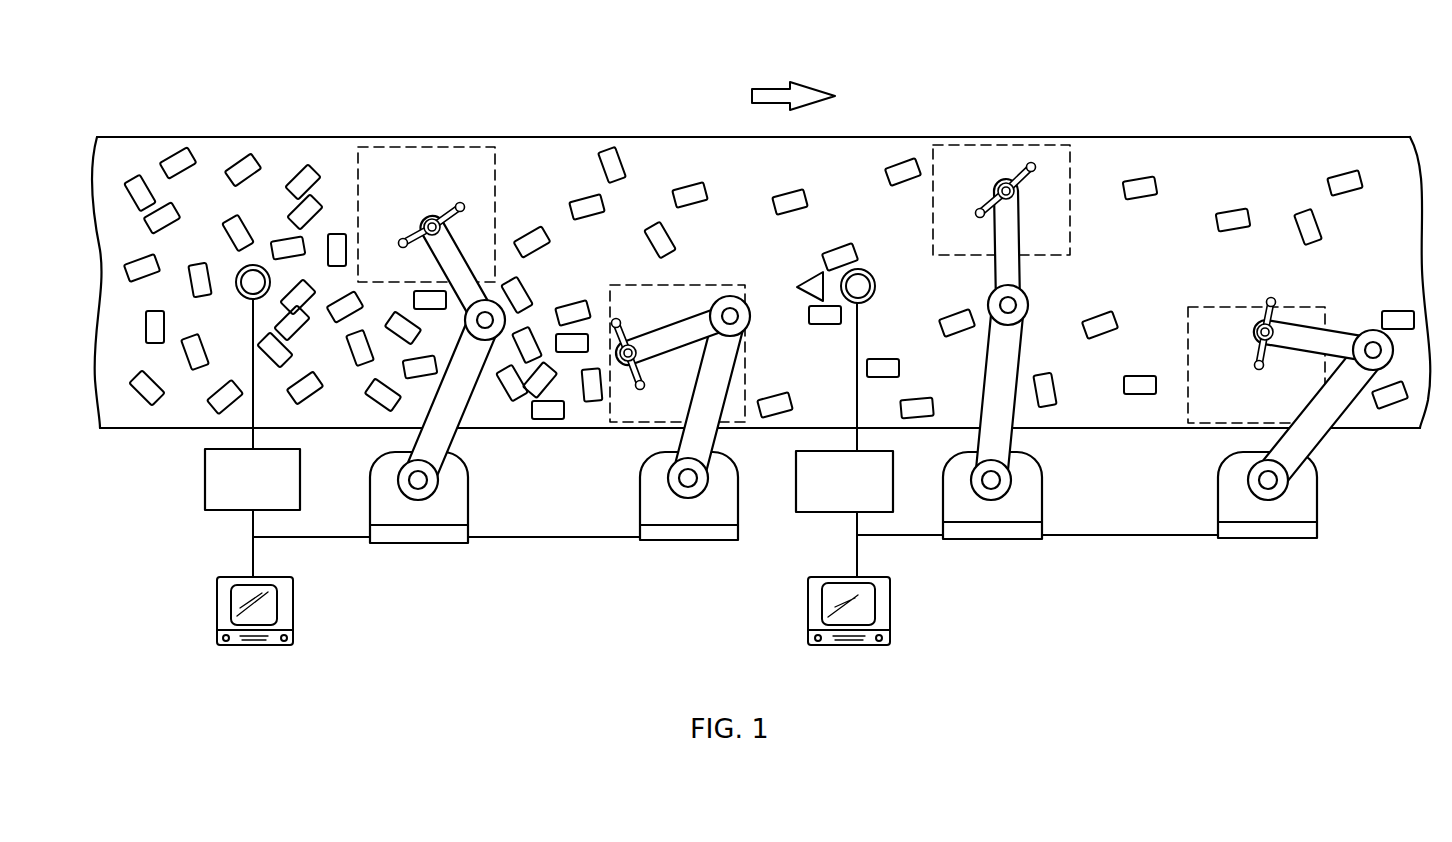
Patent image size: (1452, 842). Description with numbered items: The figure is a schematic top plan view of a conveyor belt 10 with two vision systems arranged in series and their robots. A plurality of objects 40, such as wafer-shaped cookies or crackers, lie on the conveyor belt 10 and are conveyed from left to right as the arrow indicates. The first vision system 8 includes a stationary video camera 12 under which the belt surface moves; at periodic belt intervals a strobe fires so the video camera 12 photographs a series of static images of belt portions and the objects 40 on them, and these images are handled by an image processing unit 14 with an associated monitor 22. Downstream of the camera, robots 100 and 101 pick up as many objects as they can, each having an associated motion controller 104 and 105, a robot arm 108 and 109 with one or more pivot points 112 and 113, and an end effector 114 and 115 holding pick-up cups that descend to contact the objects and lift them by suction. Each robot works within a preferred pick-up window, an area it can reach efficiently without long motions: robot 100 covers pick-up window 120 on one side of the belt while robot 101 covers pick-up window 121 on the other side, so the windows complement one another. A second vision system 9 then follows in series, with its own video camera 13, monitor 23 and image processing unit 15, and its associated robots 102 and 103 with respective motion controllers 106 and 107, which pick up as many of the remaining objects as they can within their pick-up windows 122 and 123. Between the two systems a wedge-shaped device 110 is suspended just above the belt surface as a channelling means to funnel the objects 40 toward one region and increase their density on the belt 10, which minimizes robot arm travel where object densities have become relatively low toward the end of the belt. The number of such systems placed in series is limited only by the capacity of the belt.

The first vision system 8 is at (183, 122).
The second vision system 9 is at (1168, 130).
The conveyor belt 10 is at (527, 137).
The video camera 12 is at (255, 265).
The video camera 13 is at (859, 269).
The image processing unit 14 is at (205, 498).
The image processing unit 15 is at (893, 466).
The monitor 22 is at (217, 608).
The monitor 23 is at (808, 612).
The objects 40 is at (133, 185).
The robot 100 is at (479, 341).
The robot 101 is at (692, 340).
The robot 102 is at (1080, 374).
The robot 103 is at (1306, 436).
The motion controller 104 is at (437, 543).
The motion controller 105 is at (668, 540).
The motion controller 106 is at (1018, 540).
The motion controller 107 is at (1296, 540).
The robot arm 108 is at (485, 400).
The robot arm 109 is at (735, 400).
The wedge-shaped device 110 is at (797, 287).
The pivot point 112 is at (506, 318).
The pivot point 113 is at (751, 316).
The end effector 114 is at (436, 218).
The end effector 115 is at (630, 330).
The pick-up window 120 is at (383, 143).
The pick-up window 121 is at (614, 283).
The pick-up window 122 is at (975, 145).
The pick-up window 123 is at (1200, 423).